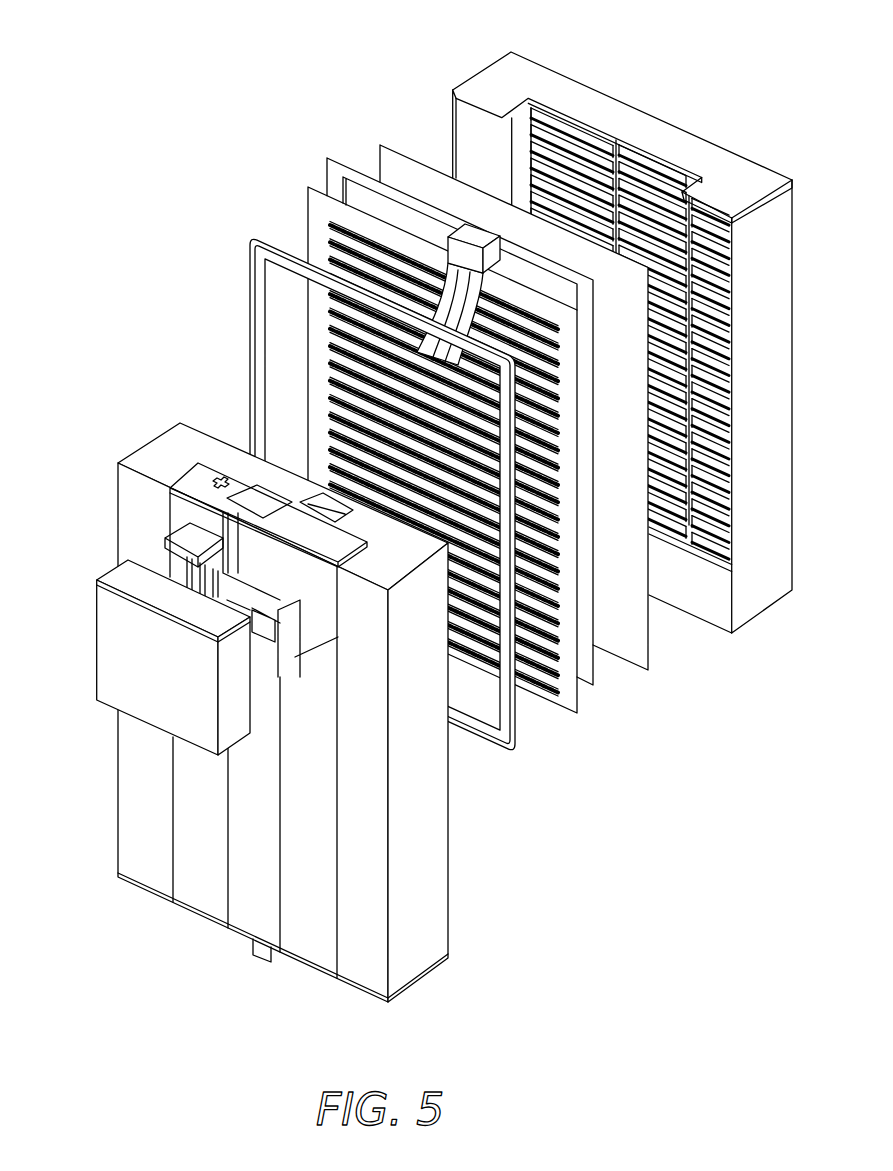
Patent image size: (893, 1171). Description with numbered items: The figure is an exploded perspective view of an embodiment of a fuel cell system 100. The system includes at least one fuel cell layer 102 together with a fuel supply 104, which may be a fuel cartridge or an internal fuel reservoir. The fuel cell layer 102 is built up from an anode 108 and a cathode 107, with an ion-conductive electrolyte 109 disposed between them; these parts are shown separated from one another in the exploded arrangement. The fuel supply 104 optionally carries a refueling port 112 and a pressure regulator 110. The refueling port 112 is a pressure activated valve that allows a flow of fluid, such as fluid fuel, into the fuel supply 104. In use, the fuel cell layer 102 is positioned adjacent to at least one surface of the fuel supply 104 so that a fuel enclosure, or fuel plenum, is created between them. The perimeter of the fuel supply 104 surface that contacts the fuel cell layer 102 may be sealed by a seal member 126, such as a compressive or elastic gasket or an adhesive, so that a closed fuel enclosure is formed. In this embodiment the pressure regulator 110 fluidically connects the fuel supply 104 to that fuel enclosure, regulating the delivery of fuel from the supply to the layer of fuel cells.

The fuel cell system 100 is at (121, 73).
The fuel cell layer 102 is at (570, 725).
The fuel supply 104 is at (128, 489).
The cathode 107 is at (567, 670).
The anode 108 is at (555, 687).
The ion-conductive electrolyte 109 is at (578, 708).
The pressure regulator 110 is at (320, 628).
The refueling port 112 is at (251, 942).
The seal member 126 is at (249, 343).